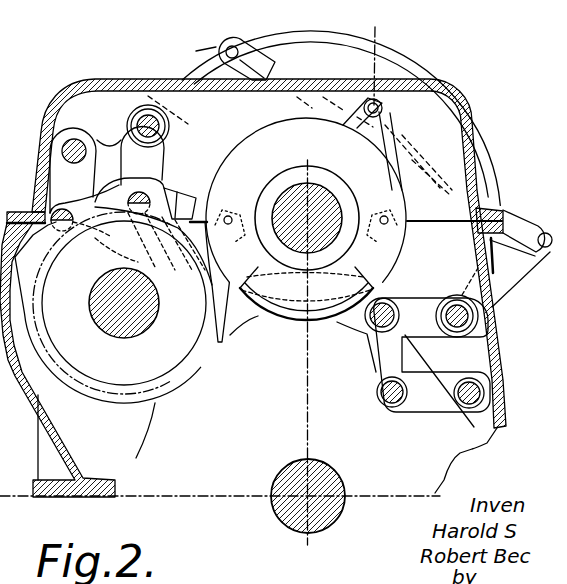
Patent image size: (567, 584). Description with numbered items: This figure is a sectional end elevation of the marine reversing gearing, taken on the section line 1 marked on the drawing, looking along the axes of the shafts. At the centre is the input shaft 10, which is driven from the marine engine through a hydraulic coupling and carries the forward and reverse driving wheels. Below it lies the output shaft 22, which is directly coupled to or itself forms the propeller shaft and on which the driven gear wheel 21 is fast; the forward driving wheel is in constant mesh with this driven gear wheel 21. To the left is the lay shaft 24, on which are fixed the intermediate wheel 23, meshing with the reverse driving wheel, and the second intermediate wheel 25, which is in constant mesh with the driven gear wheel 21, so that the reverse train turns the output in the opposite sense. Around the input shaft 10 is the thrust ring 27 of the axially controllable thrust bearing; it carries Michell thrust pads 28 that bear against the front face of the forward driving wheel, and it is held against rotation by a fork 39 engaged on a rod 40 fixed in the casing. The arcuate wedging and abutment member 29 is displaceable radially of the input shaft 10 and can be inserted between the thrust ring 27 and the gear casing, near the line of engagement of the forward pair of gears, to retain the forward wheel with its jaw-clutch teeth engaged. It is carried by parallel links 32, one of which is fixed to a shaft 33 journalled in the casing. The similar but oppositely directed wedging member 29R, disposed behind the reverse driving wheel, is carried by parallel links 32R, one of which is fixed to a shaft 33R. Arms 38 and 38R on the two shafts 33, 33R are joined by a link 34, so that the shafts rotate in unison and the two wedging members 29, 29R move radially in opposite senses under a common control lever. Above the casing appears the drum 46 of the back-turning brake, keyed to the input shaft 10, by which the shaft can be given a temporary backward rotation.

The section line 1- 1 is at (375, 27).
The input shaft 10 is at (310, 220).
The driven gear wheel 21 is at (148, 433).
The output shaft 22 is at (305, 459).
The intermediate wheel 23 is at (137, 403).
The lay shaft 24 is at (104, 304).
The second intermediate wheel 25 is at (89, 393).
The thrust ring 27 is at (404, 198).
The Michell thrust pads 28 is at (408, 234).
The arcuate wedging and abutment member 29 is at (320, 327).
The wedging and abutment member 29R is at (175, 190).
The parallel links 32 is at (433, 333).
The parallel links 32R is at (101, 141).
The shaft 33 is at (470, 339).
The shaft 33R is at (170, 133).
The link 34 is at (270, 80).
The arm 38 is at (525, 268).
The arm 38R is at (191, 52).
The fork 39 is at (394, 128).
The rod 40 is at (383, 108).
The drum 46 is at (412, 62).